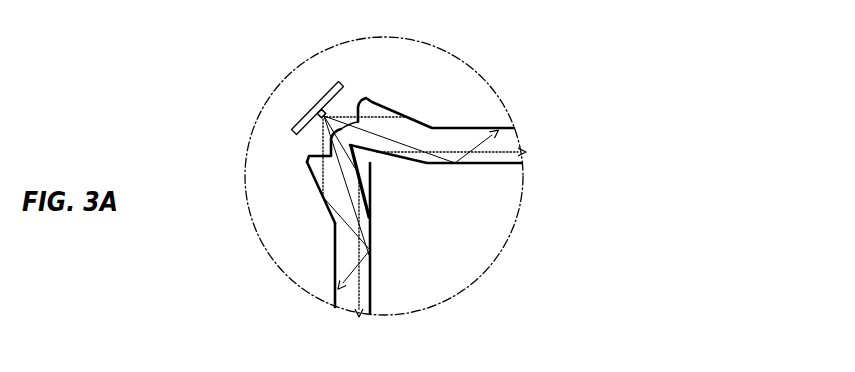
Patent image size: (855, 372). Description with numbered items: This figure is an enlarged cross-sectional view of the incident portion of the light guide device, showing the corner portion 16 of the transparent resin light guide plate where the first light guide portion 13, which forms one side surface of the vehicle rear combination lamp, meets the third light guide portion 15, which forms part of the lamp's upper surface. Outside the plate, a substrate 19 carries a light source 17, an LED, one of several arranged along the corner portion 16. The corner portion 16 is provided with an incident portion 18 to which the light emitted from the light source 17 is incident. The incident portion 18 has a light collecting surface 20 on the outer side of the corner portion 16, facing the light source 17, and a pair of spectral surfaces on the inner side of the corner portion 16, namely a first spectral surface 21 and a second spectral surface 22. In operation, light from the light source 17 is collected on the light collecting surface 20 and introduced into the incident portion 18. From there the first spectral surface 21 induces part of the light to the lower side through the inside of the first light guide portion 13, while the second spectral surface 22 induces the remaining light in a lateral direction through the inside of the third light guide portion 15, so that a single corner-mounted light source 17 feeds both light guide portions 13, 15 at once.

The first light guide portion 13 is at (337, 250).
The third light guide portion 15 is at (462, 138).
The corner portion 16 is at (317, 185).
The light source 17 is at (317, 108).
The incident portion 18 is at (374, 103).
The substrate 19 is at (329, 83).
The light collecting surface 20 is at (309, 157).
The first spectral surface 21 is at (371, 173).
The second spectral surface 22 is at (362, 172).